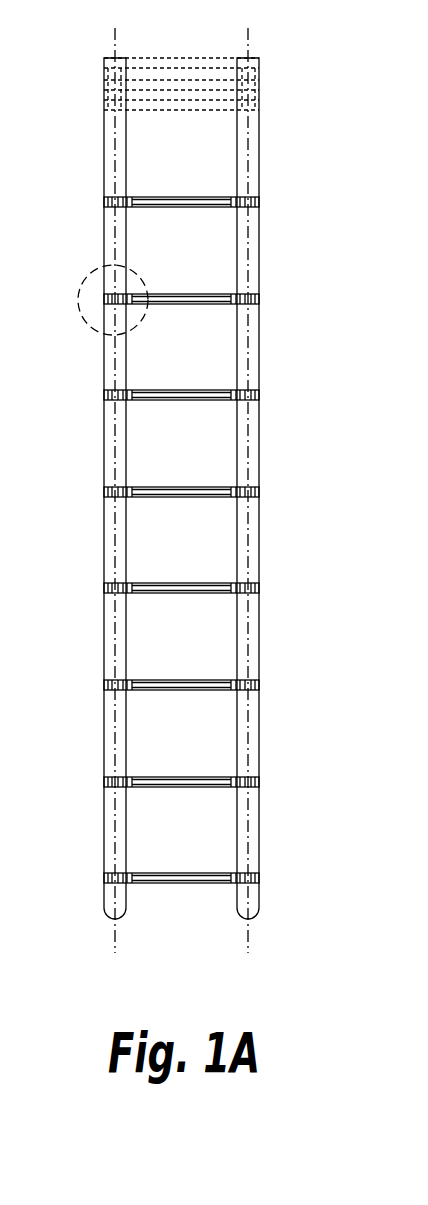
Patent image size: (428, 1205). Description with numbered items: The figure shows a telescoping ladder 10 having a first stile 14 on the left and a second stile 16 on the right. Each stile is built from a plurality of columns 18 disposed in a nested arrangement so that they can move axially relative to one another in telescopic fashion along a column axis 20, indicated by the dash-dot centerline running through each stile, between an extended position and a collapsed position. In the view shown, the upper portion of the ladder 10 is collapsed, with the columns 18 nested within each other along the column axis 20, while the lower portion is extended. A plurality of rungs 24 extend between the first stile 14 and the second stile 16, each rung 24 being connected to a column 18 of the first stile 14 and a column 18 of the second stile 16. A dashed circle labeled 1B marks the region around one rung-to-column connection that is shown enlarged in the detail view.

The telescoping ladder 10 is at (189, 509).
The first stile 14 is at (88, 563).
The second stile 16 is at (275, 564).
The column 18 is at (184, 490).
The column axis 20 is at (103, 48).
The rung 24 is at (165, 678).
The detail view circle 1B is at (93, 270).